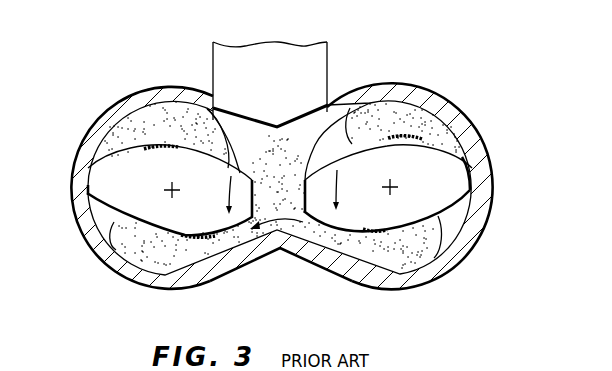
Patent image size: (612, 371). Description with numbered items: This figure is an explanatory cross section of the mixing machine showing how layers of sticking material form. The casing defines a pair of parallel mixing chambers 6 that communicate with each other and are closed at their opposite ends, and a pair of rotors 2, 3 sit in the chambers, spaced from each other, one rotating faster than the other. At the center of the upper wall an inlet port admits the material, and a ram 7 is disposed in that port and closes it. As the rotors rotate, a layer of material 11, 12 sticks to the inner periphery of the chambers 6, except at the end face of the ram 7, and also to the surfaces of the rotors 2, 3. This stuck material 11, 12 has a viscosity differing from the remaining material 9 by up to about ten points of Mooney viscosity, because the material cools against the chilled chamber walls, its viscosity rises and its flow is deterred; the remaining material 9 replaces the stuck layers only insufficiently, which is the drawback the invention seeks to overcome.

The rotor 2 is at (435, 189).
The rotor 3 is at (141, 190).
The mixing chamber 6 is at (468, 133).
The ram 7 is at (214, 57).
The remaining material 9 is at (170, 112).
The layer of sticking material 11 is at (314, 271).
The layer of sticking material 12 is at (160, 142).